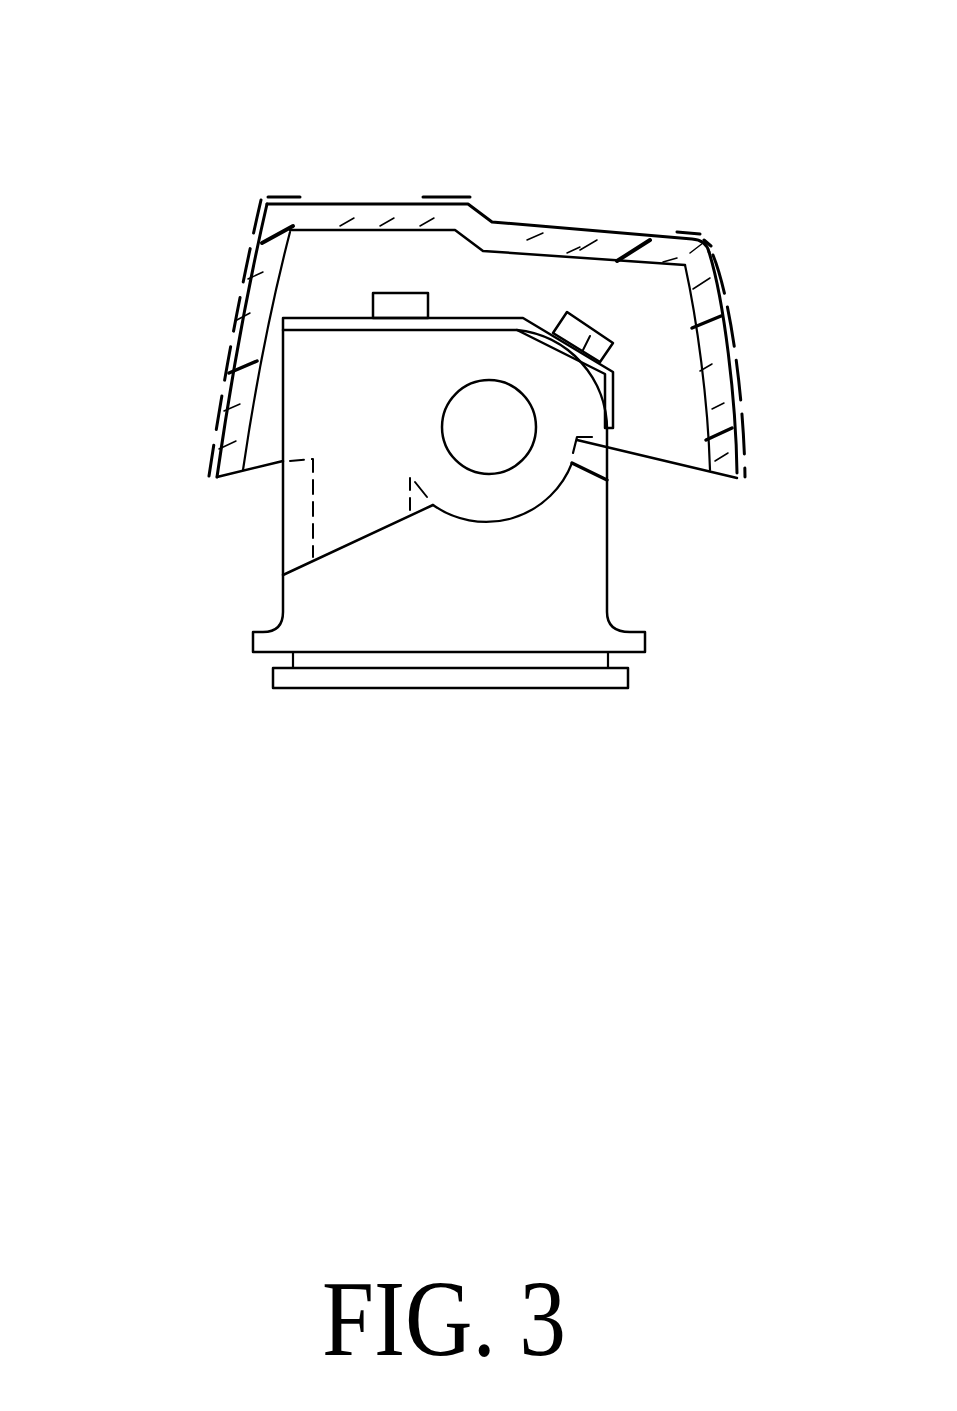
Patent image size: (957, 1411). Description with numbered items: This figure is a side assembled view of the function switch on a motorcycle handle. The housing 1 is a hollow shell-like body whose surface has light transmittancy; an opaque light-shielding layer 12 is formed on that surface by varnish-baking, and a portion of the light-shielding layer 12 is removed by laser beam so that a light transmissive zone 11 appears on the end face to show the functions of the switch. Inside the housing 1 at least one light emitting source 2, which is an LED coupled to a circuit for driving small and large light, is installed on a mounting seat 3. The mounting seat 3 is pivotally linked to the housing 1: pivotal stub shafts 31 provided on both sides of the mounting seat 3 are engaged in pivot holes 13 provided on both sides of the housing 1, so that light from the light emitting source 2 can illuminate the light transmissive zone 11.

The housing 1 is at (463, 246).
The light transmissive zone 11 is at (608, 223).
The light-shielding layer 12 is at (720, 312).
The light emitting source 2 is at (399, 302).
The mounting seat 3 is at (460, 565).
The pivotal stub shaft 31 is at (493, 452).
The pivot hole 13 is at (527, 457).